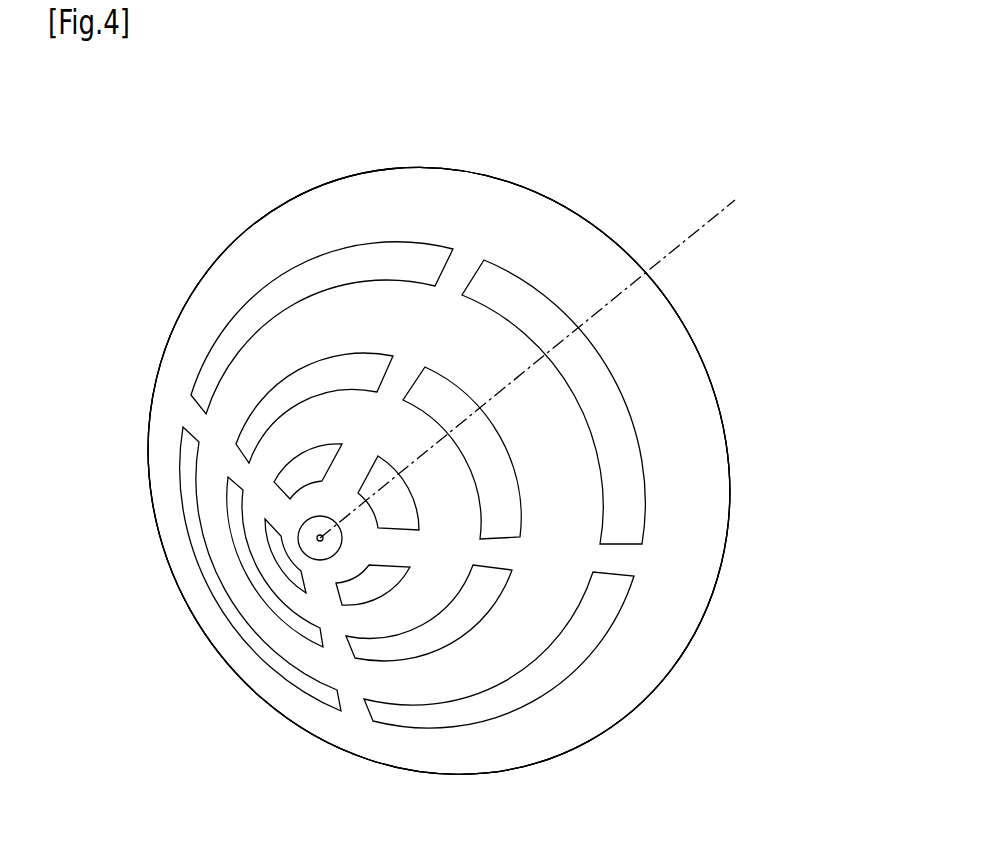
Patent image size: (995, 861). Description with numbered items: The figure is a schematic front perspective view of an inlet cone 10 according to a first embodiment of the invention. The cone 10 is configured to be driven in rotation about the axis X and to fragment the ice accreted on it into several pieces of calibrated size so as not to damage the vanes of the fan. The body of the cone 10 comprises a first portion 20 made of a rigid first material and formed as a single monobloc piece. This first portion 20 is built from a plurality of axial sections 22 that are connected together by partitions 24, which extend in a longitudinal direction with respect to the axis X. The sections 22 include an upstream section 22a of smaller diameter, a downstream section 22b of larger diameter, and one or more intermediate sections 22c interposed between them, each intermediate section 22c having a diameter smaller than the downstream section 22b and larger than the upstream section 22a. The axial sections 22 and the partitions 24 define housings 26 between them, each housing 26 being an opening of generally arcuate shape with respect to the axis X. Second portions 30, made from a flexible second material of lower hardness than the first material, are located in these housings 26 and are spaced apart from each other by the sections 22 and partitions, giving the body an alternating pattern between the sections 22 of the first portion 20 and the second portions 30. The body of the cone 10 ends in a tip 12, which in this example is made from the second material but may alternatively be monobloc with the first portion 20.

The inlet cone 10 is at (480, 140).
The tip 12 is at (296, 538).
The first portion 20 is at (205, 295).
The axial sections 22 is at (418, 602).
The upstream section 22a is at (290, 548).
The downstream section 22b is at (296, 706).
The intermediate section 22c is at (273, 572).
The partitions 24 is at (327, 597).
The housings 26 is at (385, 588).
The second portions 30 is at (317, 366).
The axis X is at (696, 237).